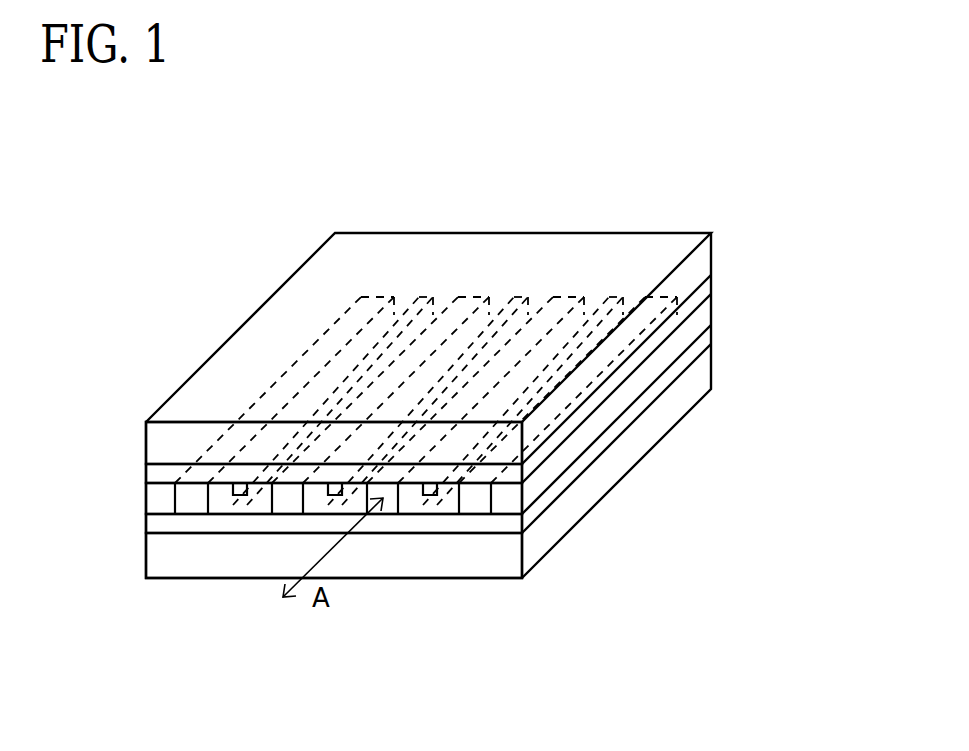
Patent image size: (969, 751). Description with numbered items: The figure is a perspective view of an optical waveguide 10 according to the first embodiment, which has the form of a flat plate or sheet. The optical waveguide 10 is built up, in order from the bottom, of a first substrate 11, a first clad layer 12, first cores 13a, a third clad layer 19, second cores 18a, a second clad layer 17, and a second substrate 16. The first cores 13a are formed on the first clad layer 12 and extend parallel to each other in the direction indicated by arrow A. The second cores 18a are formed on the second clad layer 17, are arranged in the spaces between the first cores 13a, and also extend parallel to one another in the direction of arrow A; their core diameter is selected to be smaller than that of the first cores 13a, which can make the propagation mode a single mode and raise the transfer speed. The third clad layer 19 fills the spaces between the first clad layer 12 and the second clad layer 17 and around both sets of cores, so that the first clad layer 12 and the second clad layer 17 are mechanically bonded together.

The optical waveguide 10 is at (148, 242).
The first substrate 11 is at (698, 393).
The first clad layer 12 is at (700, 352).
The first cores 13a is at (188, 498).
The second substrate 16 is at (703, 269).
The second clad layer 17 is at (702, 291).
The second cores 18a is at (247, 490).
The third clad layer 19 is at (701, 330).